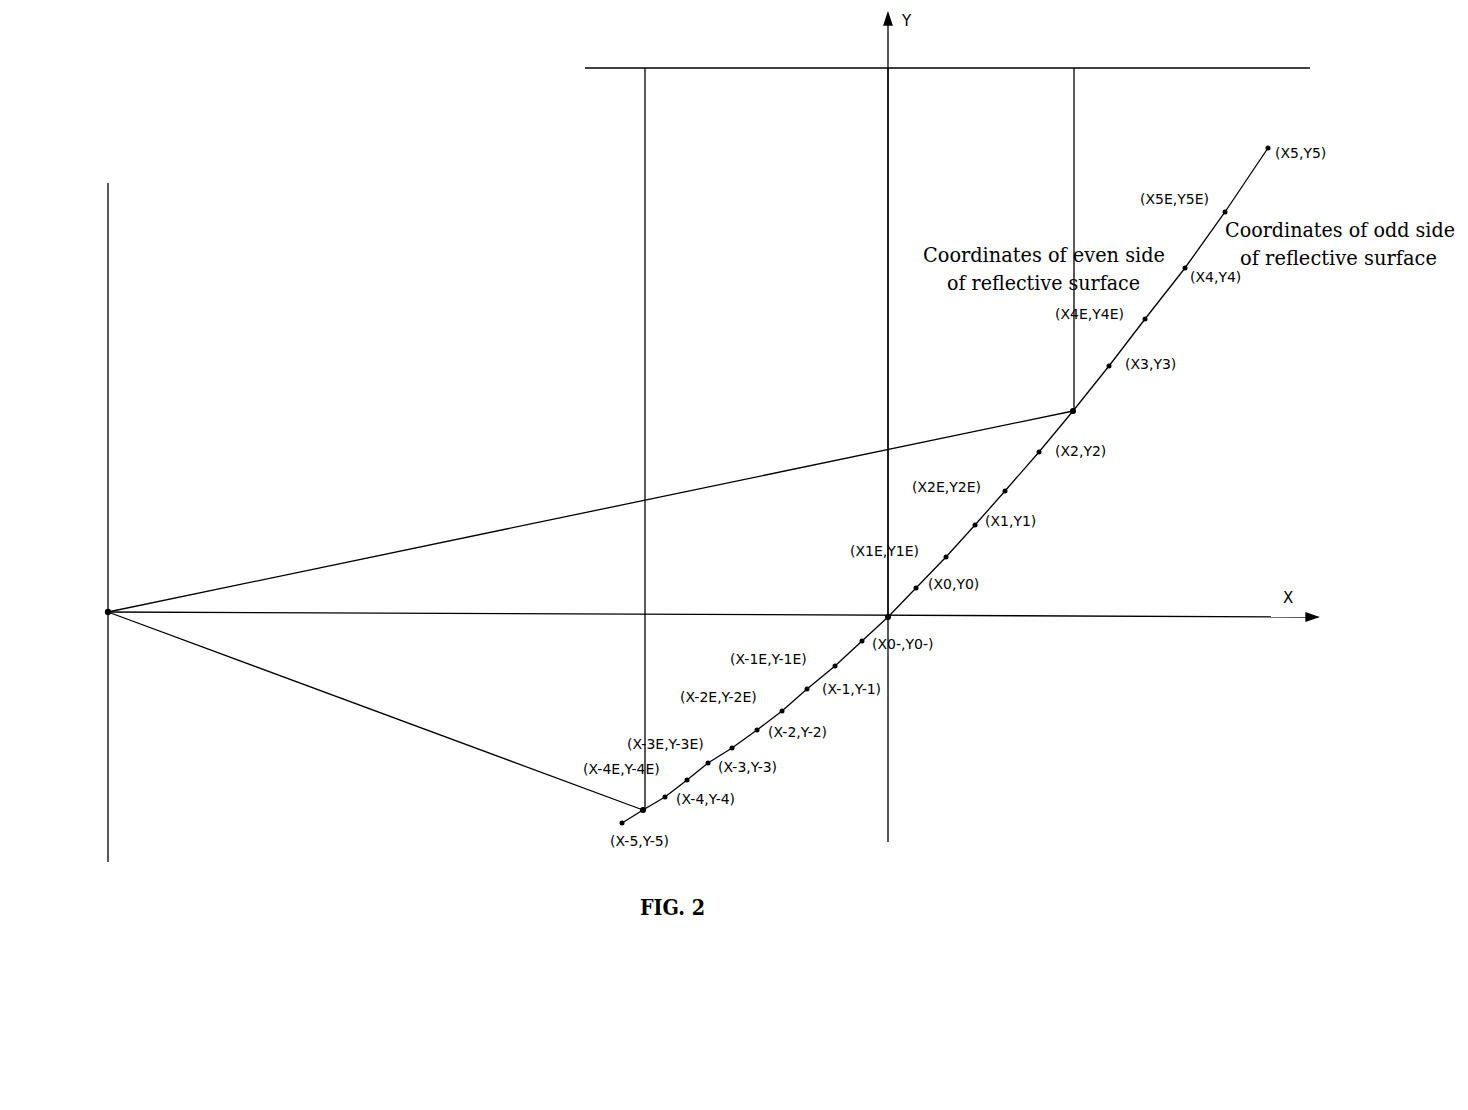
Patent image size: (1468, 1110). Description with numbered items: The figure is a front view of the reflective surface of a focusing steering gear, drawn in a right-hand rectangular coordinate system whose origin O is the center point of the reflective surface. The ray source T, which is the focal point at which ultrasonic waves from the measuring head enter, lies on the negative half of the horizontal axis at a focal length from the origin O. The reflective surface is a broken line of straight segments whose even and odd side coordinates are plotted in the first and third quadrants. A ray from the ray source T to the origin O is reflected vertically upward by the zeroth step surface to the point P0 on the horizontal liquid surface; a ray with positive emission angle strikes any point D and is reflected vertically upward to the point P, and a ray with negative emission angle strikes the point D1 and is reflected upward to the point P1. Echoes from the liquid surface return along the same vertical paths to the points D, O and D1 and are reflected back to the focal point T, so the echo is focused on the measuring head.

The ray source T is at (578, 610).
The point on the reflective surface D is at (1020, 405).
The point on the reflective surface D1 is at (579, 802).
The origin of coordinates O is at (835, 609).
The point on the liquid surface P is at (1063, 239).
The point on the liquid surface P0 is at (872, 342).
The point on the liquid surface P1 is at (630, 439).